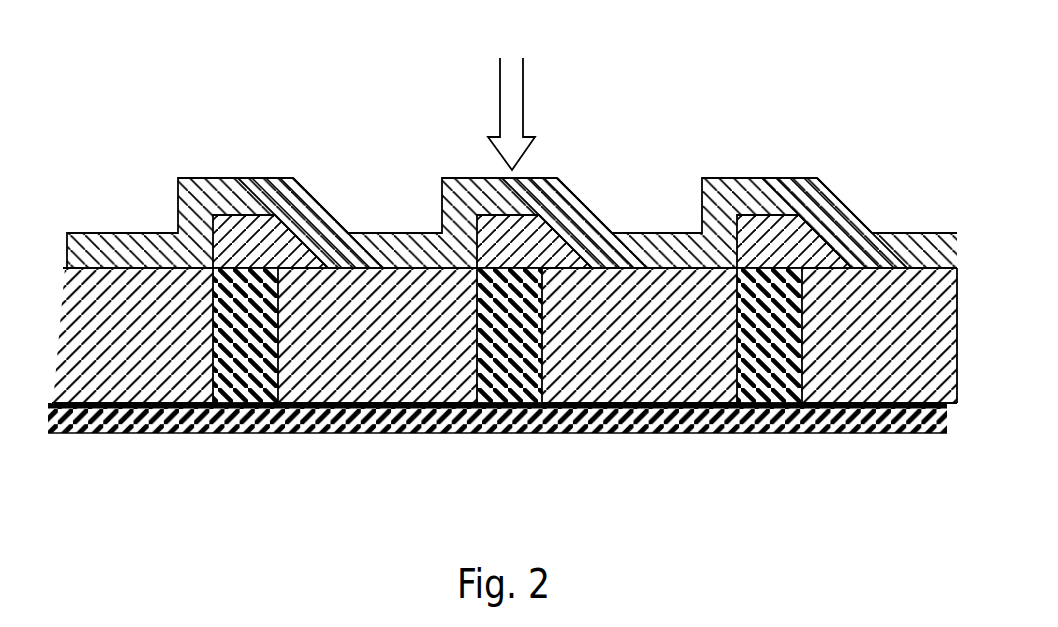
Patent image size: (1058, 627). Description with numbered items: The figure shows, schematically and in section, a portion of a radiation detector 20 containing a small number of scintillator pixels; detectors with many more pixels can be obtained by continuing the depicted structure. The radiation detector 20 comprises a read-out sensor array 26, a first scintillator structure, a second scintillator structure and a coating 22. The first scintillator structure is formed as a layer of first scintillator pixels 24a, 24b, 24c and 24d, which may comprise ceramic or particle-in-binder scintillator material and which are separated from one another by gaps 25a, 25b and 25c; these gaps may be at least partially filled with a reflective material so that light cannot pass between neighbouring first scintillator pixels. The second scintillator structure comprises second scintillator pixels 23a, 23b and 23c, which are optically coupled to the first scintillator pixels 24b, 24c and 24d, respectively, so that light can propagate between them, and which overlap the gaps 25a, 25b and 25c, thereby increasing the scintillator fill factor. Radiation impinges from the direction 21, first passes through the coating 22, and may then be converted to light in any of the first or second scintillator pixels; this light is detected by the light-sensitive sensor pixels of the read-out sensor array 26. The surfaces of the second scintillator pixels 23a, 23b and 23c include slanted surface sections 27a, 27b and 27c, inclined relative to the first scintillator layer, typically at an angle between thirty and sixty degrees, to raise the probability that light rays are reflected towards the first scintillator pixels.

The radiation detector 20 is at (115, 152).
The direction 21 is at (528, 97).
The coating 22 is at (196, 187).
The second scintillator pixel 23a is at (266, 227).
The second scintillator pixel 23b is at (550, 227).
The second scintillator pixel 23c is at (798, 227).
The first scintillator pixel 24a is at (128, 374).
The first scintillator pixel 24b is at (394, 379).
The first scintillator pixel 24c is at (659, 379).
The first scintillator pixel 24d is at (892, 376).
The gap 25a is at (261, 397).
The gap 25b is at (517, 396).
The gap 25c is at (772, 397).
The read-out sensor array 26 is at (161, 436).
The slanted surface section 27a is at (317, 230).
The slanted surface section 27b is at (573, 230).
The slanted surface section 27c is at (830, 236).